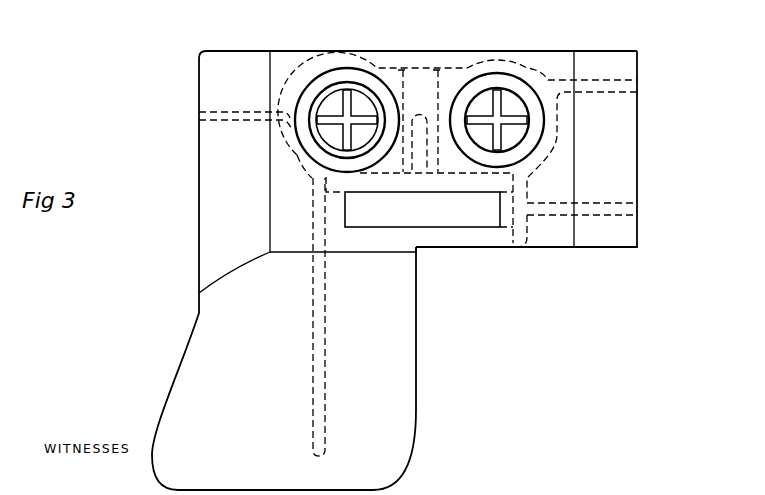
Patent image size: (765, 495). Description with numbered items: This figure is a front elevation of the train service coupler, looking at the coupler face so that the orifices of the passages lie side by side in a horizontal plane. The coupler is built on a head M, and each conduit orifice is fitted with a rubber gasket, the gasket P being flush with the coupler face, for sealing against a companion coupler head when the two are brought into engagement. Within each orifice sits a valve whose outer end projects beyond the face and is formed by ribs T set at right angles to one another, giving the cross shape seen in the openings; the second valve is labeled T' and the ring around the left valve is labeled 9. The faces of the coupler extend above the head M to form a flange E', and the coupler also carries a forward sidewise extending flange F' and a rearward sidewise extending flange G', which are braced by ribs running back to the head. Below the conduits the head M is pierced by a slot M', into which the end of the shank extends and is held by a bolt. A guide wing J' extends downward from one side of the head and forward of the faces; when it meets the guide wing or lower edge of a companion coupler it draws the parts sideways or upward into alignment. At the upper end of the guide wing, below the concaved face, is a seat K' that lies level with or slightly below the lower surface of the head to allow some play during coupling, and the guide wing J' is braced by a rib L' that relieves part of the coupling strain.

The ribs T is at (351, 81).
The screw-head boss T' is at (505, 92).
The ring of boss 9 is at (308, 135).
The flange E' is at (418, 153).
The rearward sidewise extending flange G' is at (548, 149).
The rubber gasket P is at (533, 131).
The head M is at (577, 243).
The slot M' is at (440, 238).
The seat K' is at (343, 169).
The forward sidewise extending flange F' is at (202, 267).
The rib L' is at (280, 317).
The guide wing J' is at (300, 368).